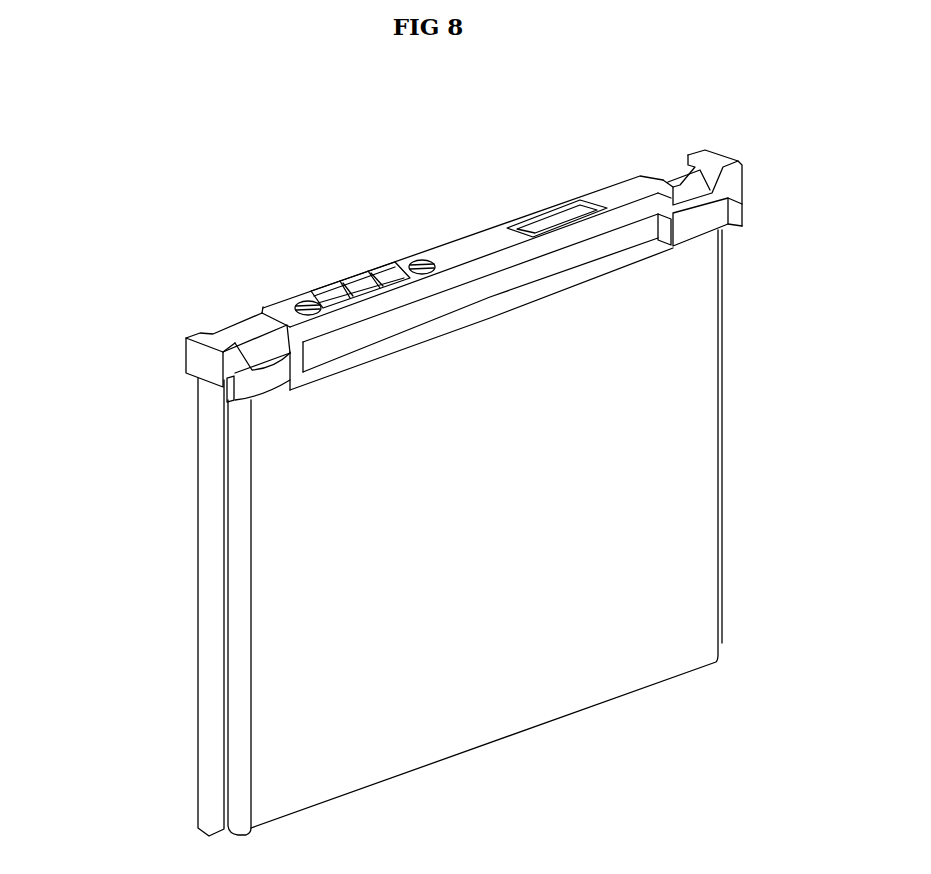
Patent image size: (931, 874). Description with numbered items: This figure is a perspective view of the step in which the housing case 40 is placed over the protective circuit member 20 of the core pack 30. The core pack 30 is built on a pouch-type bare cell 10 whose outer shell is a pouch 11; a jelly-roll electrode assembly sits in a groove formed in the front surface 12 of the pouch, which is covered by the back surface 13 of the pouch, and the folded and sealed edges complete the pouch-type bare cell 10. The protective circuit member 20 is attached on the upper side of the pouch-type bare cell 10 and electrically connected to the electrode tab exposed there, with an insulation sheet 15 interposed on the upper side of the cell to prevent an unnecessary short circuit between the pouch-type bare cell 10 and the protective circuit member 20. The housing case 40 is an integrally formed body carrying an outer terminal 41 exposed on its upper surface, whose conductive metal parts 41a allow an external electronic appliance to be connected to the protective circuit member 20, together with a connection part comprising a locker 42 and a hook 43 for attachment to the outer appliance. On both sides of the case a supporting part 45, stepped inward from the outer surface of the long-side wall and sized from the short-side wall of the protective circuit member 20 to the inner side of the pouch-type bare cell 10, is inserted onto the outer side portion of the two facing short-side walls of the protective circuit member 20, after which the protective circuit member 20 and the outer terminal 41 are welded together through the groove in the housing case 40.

The pouch-type bare cell 10 is at (197, 722).
The pouch 11 is at (108, 527).
The front surface of the pouch 12 is at (240, 578).
The back surface of the pouch 13 is at (213, 532).
The insulation sheet 15 is at (227, 403).
The protective circuit member 20 is at (225, 368).
The core pack 30 is at (108, 398).
The housing case 40 is at (617, 192).
The outer terminal 41 is at (345, 275).
The metal part 41a is at (393, 273).
The locker 42 is at (677, 183).
The hook 43 is at (263, 343).
The supporting part 45 is at (720, 215).